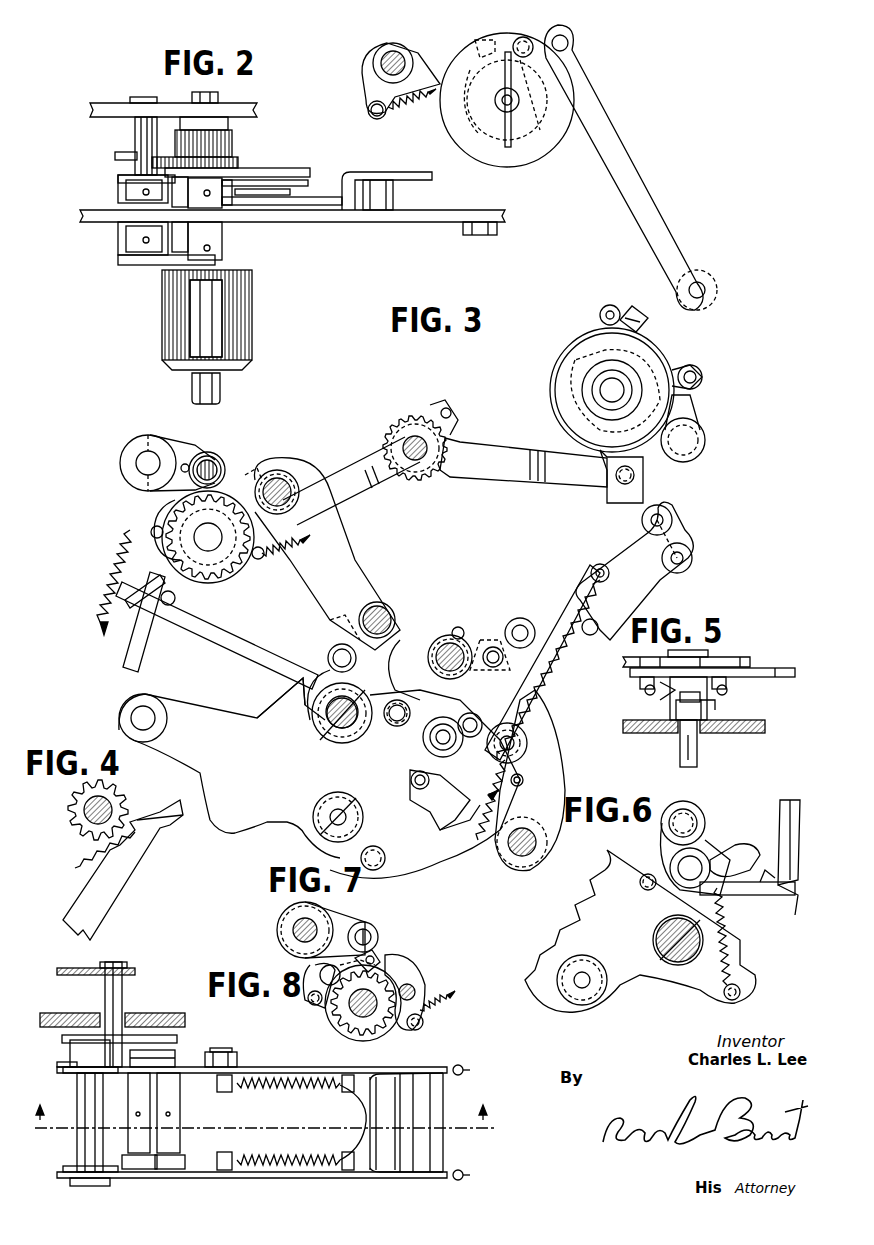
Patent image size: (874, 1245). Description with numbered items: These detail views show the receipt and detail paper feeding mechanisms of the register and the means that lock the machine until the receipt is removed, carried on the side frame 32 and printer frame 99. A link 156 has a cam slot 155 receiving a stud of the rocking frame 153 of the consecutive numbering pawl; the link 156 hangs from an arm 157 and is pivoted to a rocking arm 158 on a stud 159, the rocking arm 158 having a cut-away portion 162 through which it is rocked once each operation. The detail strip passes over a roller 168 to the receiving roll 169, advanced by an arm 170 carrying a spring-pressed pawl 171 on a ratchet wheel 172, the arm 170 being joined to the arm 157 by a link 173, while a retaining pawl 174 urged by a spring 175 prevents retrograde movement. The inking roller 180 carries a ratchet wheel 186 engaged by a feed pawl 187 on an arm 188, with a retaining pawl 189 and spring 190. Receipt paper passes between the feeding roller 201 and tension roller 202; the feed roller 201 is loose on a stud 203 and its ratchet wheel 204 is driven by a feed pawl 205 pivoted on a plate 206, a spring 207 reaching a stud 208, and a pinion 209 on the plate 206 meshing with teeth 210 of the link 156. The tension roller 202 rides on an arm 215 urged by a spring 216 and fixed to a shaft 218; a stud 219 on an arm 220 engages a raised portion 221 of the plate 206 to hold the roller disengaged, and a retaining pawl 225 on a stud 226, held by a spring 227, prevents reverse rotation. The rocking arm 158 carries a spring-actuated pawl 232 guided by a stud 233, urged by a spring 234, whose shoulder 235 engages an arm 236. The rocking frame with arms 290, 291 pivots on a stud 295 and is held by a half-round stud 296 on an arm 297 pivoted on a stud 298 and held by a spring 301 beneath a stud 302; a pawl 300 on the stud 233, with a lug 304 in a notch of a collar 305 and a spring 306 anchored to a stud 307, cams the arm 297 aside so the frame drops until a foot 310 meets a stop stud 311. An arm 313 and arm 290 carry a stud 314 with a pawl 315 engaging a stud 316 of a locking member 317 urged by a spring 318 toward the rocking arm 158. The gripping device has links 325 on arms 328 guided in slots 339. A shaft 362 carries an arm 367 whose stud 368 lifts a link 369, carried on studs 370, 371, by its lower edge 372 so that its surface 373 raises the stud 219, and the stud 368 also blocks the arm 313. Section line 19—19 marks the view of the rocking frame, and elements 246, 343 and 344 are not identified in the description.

In FIG. 8, the section line 19— 19 is at (269, 1129).
In FIG. 2, the side frame 32 is at (240, 103).
In FIG. 2, the printer frame 99 is at (346, 218).
In FIG. 5, the printer frame 99 is at (760, 731).
In FIG. 3, the rocking frame 153 is at (430, 405).
In FIG. 3, the cam slot 155 is at (390, 500).
In FIG. 2, the link 156 is at (290, 168).
In FIG. 3, the link 156 is at (428, 480).
In FIG. 4, the link 156 is at (152, 848).
In FIG. 3, the arm 157 is at (610, 500).
In FIG. 3, the rocking arm 158 is at (190, 714).
In FIG. 5, the rocking arm 158 is at (732, 660).
In FIG. 6, the rocking arm 158 is at (648, 975).
In FIG. 3, the stud 159 is at (320, 805).
In FIG. 6, the stud 159 is at (575, 985).
In FIG. 3, the cut-away portion 162 is at (303, 700).
In FIG. 3, the roller 168 is at (398, 45).
In FIG. 3, the receiving roll 169 is at (522, 167).
In FIG. 3, the arm 170 is at (545, 72).
In FIG. 3, the spring-pressed pawl 171 is at (508, 45).
In FIG. 3, the ratchet wheel 172 is at (540, 110).
In FIG. 3, the link 173 is at (665, 196).
In FIG. 3, the retaining pawl 174 is at (424, 104).
In FIG. 3, the spring 175 is at (370, 102).
In FIG. 3, the inking roller 180 is at (590, 332).
In FIG. 3, the ratchet wheel 186 is at (580, 375).
In FIG. 3, the feed pawl 187 is at (632, 305).
In FIG. 3, the arm 188 is at (608, 306).
In FIG. 3, the retaining pawl 189 is at (698, 420).
In FIG. 3, the spring 190 is at (700, 387).
In FIG. 2, the feeding roller 201 is at (248, 322).
In FIG. 3, the feeding roller 201 is at (220, 476).
In FIG. 2, the tension roller 202 is at (215, 305).
In FIG. 3, the tension roller 202 is at (216, 466).
In FIG. 2, the stud 203 is at (222, 388).
In FIG. 3, the stud 203 is at (215, 555).
In FIG. 4, the stud 203 is at (100, 800).
In FIG. 7, the stud 203 is at (355, 1012).
In FIG. 7, the ratchet wheel 204 is at (370, 1040).
In FIG. 2, the feed pawl 205 is at (182, 195).
In FIG. 7, the feed pawl 205 is at (325, 1000).
In FIG. 2, the plate 206 is at (250, 182).
In FIG. 7, the plate 206 is at (340, 1032).
In FIG. 7, the spring 207 is at (378, 955).
In FIG. 7, the stud 208 is at (382, 962).
In FIG. 2, the pinion 209 is at (230, 160).
In FIG. 4, the pinion 209 is at (118, 800).
In FIG. 4, the teeth 210 is at (85, 860).
In FIG. 2, the arm 215 is at (138, 262).
In FIG. 3, the arm 215 is at (210, 455).
In FIG. 3, the spring 216 is at (184, 462).
In FIG. 2, the shaft 218 is at (140, 131).
In FIG. 3, the shaft 218 is at (140, 472).
In FIG. 7, the shaft 218 is at (293, 935).
In FIG. 2, the stud 219 is at (216, 200).
In FIG. 7, the stud 219 is at (368, 922).
In FIG. 2, the arm 220 is at (120, 182).
In FIG. 7, the arm 220 is at (340, 920).
In FIG. 7, the raised portion 221 is at (412, 958).
In FIG. 7, the retaining pawl 225 is at (415, 990).
In FIG. 7, the stud 226 is at (420, 1008).
In FIG. 3, the spring 227 is at (290, 552).
In FIG. 7, the spring 227 is at (448, 1010).
In FIG. 5, the spring-actuated pawl 232 is at (768, 668).
In FIG. 6, the spring-actuated pawl 232 is at (748, 895).
In FIG. 5, the stud 233 is at (698, 752).
In FIG. 6, the stud 233 is at (682, 868).
In FIG. 5, the spring 234 is at (645, 695).
In FIG. 6, the spring 234 is at (700, 970).
In FIG. 6, the shoulder 235 is at (780, 900).
In FIG. 6, the arm 236 is at (790, 800).
In FIG. 2, the block 246 is at (478, 236).
In FIG. 8, the arm 290 is at (425, 1067).
In FIG. 3, the arm 291 is at (603, 610).
In FIG. 8, the arm 291 is at (418, 1180).
In FIG. 3, the stud 295 is at (350, 740).
In FIG. 8, the stud 295 is at (72, 1052).
In FIG. 3, the half-round stud 296 is at (530, 730).
In FIG. 3, the arm 297 is at (550, 770).
In FIG. 6, the arm 297 is at (740, 848).
In FIG. 3, the stud 298 is at (538, 838).
In FIG. 5, the pawl 300 is at (668, 722).
In FIG. 6, the pawl 300 is at (700, 835).
In FIG. 3, the spring 301 is at (520, 786).
In FIG. 3, the stud 302 is at (527, 748).
In FIG. 8, the stud 302 is at (220, 1050).
In FIG. 5, the lug 304 is at (715, 707).
In FIG. 5, the collar 305 is at (662, 695).
In FIG. 3, the spring 306 is at (485, 812).
In FIG. 5, the spring 306 is at (728, 688).
In FIG. 6, the spring 306 is at (735, 945).
In FIG. 6, the stud 307 is at (742, 990).
In FIG. 3, the foot 310 is at (462, 835).
In FIG. 3, the stud 311 is at (385, 855).
In FIG. 3, the arm 313 is at (445, 640).
In FIG. 8, the arm 313 is at (165, 1035).
In FIG. 3, the stud 314 is at (340, 645).
In FIG. 8, the stud 314 is at (123, 988).
In FIG. 3, the pawl 315 is at (278, 648).
In FIG. 8, the pawl 315 is at (85, 976).
In FIG. 3, the stud 316 is at (135, 622).
In FIG. 3, the locking member 317 is at (125, 650).
In FIG. 3, the spring 318 is at (130, 530).
In FIG. 3, the links 325 is at (545, 640).
In FIG. 8, the links 325 is at (368, 1090).
In FIG. 3, the arms 328 is at (395, 730).
In FIG. 8, the arms 328 is at (160, 1050).
In FIG. 3, the guiding slots 339 is at (598, 565).
In FIG. 3, the spring 343 is at (575, 650).
In FIG. 3, the roller 344 is at (527, 629).
In FIG. 3, the shaft 362 is at (460, 626).
In FIG. 3, the arm 367 is at (495, 645).
In FIG. 3, the stud 368 is at (508, 640).
In FIG. 2, the link 369 is at (348, 172).
In FIG. 3, the link 369 is at (385, 590).
In FIG. 3, the stud 370 is at (360, 650).
In FIG. 3, the stud 371 is at (280, 478).
In FIG. 3, the lower edge 372 is at (440, 620).
In FIG. 3, the surface 373 is at (252, 472).